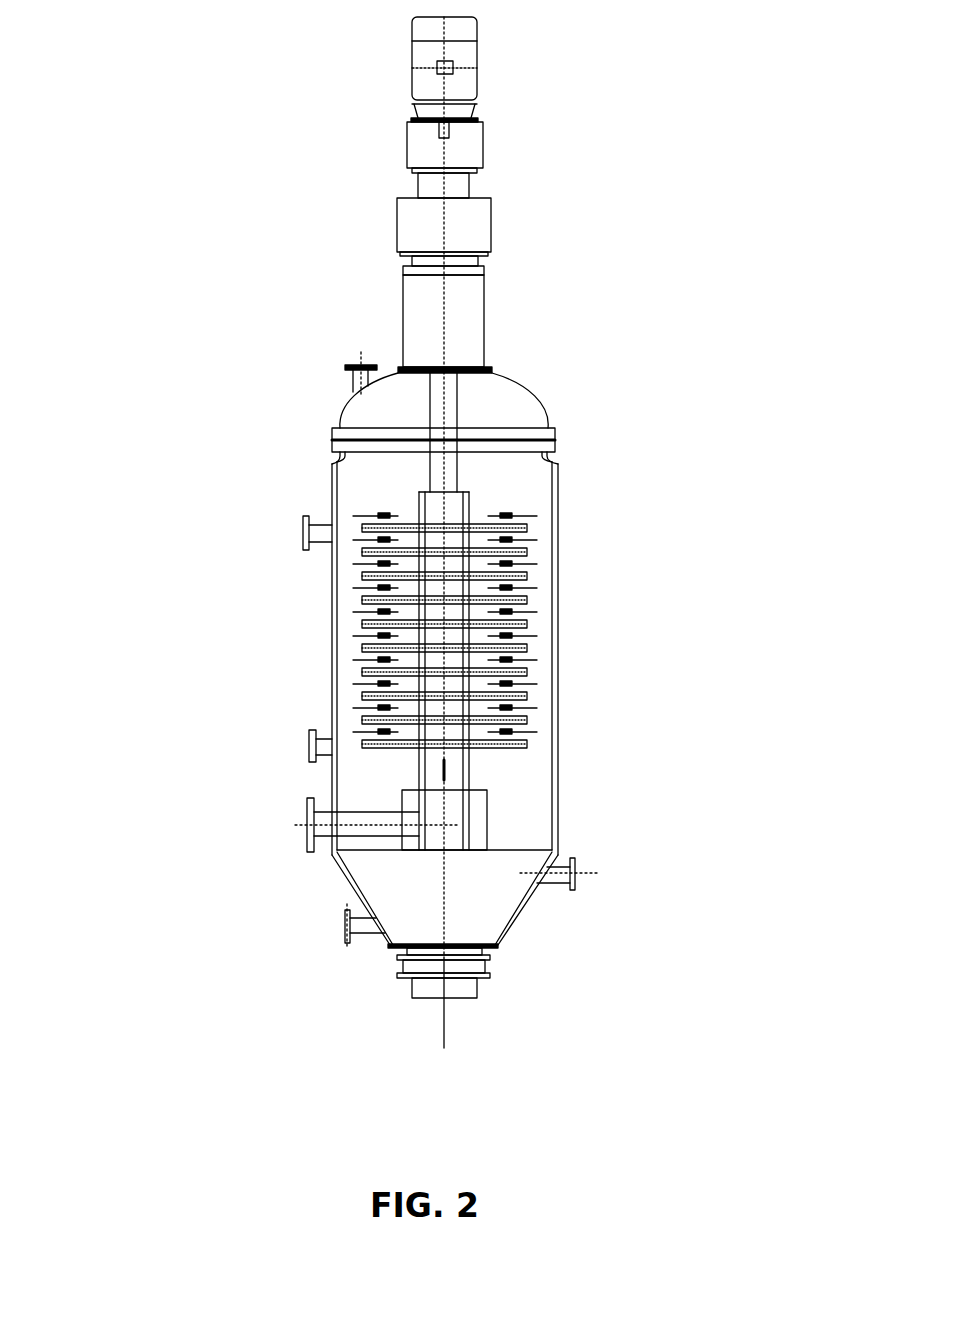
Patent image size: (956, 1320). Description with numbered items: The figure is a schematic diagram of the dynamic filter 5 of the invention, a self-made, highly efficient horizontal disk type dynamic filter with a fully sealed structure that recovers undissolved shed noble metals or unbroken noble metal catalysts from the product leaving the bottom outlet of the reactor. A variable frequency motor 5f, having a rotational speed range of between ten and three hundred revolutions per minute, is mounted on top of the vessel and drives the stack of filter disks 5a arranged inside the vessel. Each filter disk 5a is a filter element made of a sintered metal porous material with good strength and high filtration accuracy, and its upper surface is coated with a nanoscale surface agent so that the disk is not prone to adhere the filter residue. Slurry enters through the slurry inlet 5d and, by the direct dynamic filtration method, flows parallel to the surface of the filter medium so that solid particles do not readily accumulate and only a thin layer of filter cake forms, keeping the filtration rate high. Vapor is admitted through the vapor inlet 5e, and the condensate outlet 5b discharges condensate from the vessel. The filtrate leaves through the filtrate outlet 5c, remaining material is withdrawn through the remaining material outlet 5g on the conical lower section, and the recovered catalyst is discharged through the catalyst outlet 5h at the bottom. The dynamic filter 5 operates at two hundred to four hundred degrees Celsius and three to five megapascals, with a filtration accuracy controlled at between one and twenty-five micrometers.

The dynamic filter 5 is at (529, 650).
The filter disk 5a is at (541, 611).
The condensate outlet 5b is at (345, 925).
The filtrate outlet 5c is at (307, 825).
The slurry inlet 5d is at (309, 746).
The vapor inlet 5e is at (303, 533).
The variable frequency motor 5f is at (392, 194).
The remaining material outlet 5g is at (580, 873).
The catalyst outlet 5h is at (457, 993).